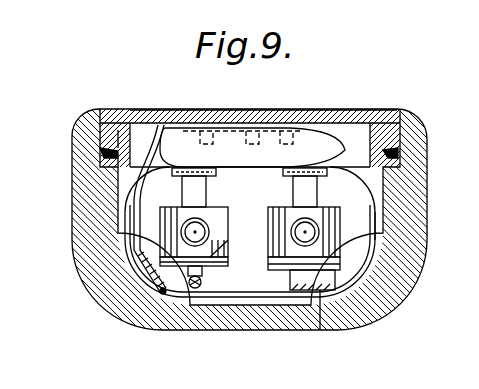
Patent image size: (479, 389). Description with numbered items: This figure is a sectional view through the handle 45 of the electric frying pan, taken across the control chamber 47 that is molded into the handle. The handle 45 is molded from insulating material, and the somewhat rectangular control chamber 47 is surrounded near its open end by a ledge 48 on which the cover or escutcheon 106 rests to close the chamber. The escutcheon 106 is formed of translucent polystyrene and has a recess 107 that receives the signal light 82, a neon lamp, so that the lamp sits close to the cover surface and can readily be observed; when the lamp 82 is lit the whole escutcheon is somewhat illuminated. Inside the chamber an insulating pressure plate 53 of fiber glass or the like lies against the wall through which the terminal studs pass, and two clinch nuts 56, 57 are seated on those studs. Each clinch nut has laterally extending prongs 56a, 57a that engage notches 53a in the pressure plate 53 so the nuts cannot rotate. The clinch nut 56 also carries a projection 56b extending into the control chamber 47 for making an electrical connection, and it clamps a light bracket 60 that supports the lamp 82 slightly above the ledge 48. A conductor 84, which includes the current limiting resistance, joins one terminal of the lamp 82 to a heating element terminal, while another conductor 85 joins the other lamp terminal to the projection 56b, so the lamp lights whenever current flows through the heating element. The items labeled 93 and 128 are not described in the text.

The handle 45 is at (418, 238).
The control chamber 47 is at (376, 188).
The ledge 48 is at (116, 152).
The pressure plate 53 is at (379, 216).
The notches 53a is at (205, 168).
The clinch nut 56 is at (229, 230).
The prongs 56a is at (216, 174).
The projection 56b is at (222, 268).
The clinch nut 57 is at (325, 200).
The prongs 57a is at (320, 168).
The light bracket 60 is at (207, 200).
The signal light 82 is at (287, 124).
The conductor 84 is at (134, 213).
The conductor 85 is at (135, 200).
The seam 93 is at (320, 331).
The cover or escutcheon 106 is at (360, 110).
The recess 107 is at (327, 122).
The seal 128 is at (120, 147).